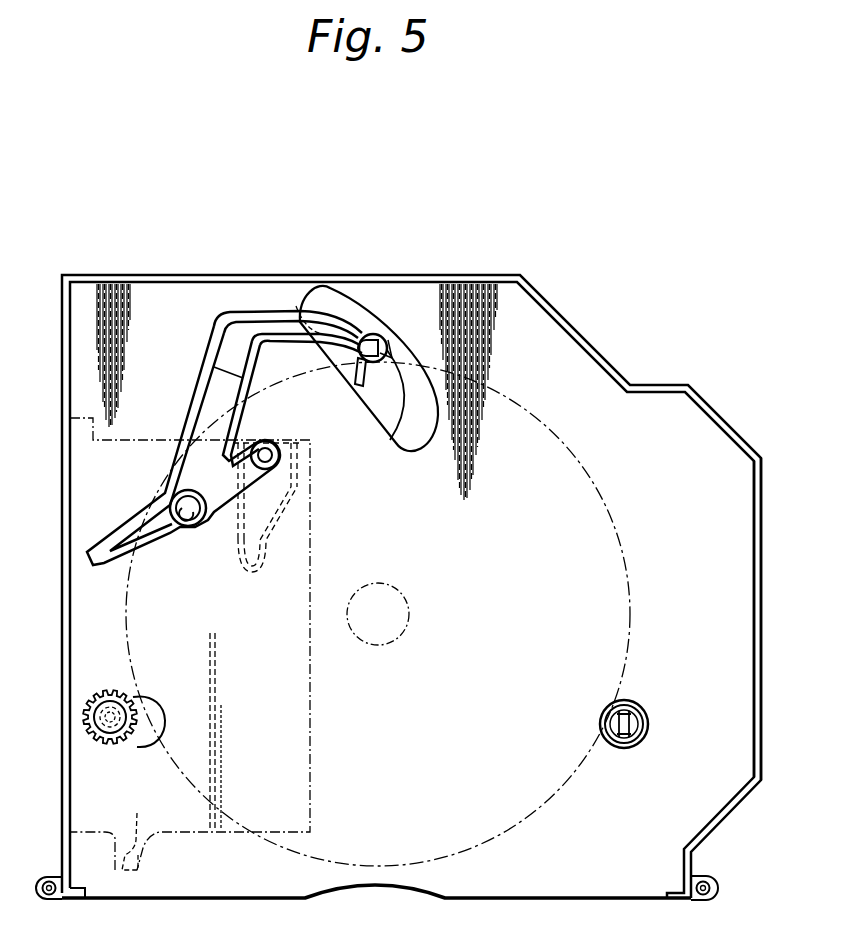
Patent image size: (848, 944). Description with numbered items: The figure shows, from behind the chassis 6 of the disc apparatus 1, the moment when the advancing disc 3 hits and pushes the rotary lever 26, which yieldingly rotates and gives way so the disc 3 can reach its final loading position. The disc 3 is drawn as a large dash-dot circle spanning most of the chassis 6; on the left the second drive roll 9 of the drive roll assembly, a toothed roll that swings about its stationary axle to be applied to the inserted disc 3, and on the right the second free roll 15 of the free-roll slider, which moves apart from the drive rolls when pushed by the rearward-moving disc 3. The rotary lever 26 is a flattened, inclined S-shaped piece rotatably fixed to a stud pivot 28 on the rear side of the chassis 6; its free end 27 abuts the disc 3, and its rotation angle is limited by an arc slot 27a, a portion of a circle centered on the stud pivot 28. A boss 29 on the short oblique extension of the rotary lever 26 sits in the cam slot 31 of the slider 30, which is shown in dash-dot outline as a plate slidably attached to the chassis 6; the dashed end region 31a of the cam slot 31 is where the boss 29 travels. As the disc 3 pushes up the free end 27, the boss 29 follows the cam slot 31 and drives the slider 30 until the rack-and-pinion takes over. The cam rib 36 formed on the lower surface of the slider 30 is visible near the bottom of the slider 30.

The apparatus 1 is at (626, 311).
The disc 3 is at (622, 527).
The chassis 6 is at (762, 580).
The second drive roll 9 is at (84, 713).
The second free roll 15 is at (650, 722).
The rotary lever 26 is at (212, 347).
The free end 27 is at (362, 385).
The arc slot 27a is at (378, 307).
The stud pivot 28 is at (191, 527).
The boss 29 is at (265, 448).
The slider 30 is at (310, 697).
The cam slot 31 is at (280, 485).
The guide rail end loop 31a is at (245, 578).
The cam rib 36 is at (143, 853).